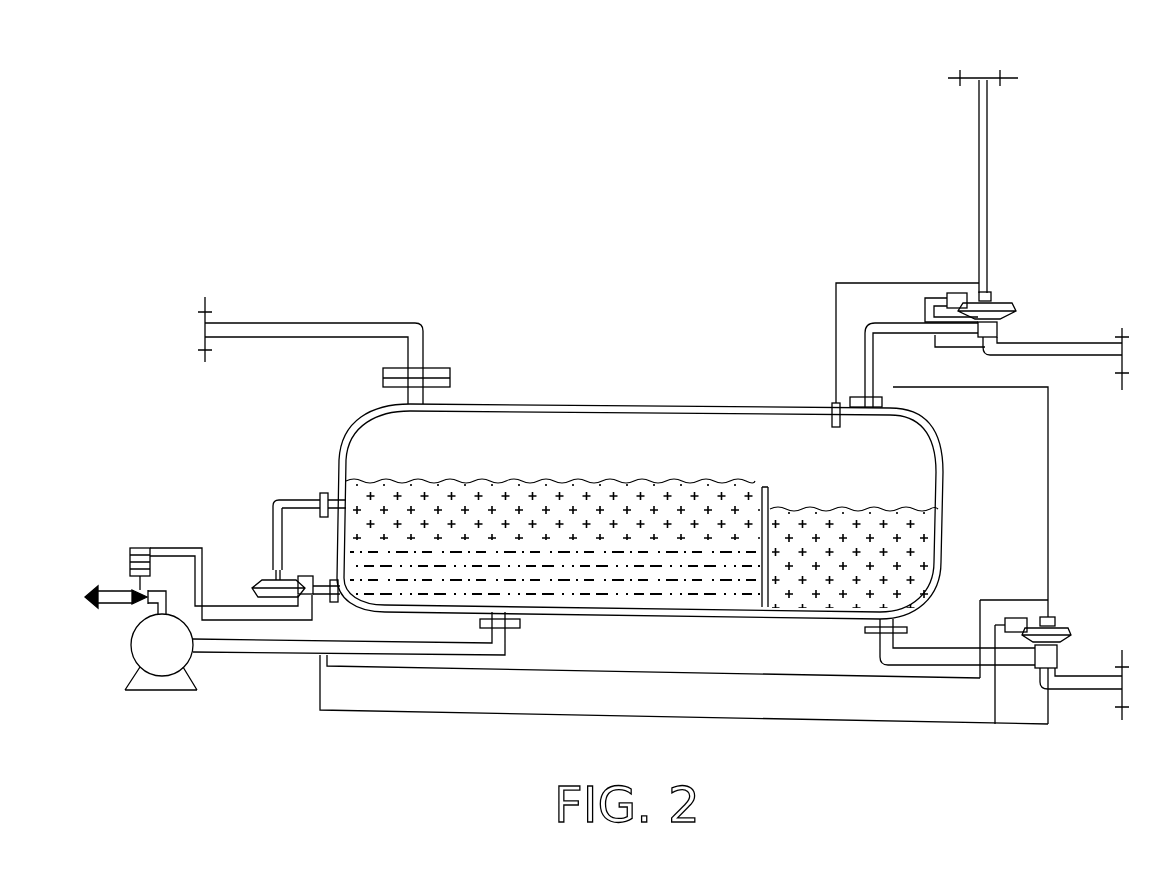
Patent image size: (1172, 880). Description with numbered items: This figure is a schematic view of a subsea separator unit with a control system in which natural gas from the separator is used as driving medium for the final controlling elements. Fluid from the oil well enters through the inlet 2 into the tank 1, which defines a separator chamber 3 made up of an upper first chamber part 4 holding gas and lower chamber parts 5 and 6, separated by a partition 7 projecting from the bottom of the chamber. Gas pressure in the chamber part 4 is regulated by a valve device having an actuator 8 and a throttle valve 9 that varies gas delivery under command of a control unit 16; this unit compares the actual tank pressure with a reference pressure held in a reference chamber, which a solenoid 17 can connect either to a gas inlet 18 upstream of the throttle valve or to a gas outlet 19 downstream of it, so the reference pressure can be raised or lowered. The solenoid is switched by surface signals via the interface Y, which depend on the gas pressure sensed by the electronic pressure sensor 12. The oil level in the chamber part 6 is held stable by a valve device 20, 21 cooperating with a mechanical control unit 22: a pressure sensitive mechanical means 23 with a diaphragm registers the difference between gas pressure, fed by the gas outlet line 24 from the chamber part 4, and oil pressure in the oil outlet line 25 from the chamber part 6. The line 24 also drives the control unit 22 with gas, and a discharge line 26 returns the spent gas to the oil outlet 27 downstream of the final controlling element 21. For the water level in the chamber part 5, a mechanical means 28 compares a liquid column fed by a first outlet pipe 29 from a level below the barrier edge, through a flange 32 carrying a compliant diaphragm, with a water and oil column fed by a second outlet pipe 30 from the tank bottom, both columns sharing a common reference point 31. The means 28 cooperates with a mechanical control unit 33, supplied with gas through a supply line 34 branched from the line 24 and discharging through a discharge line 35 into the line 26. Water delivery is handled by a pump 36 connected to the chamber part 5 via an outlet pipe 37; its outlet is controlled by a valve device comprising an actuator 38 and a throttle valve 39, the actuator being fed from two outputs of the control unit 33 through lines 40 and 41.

The tank 1 is at (620, 422).
The inlet 2 is at (430, 399).
The separator chamber 3 is at (617, 457).
The first chamber part 4 is at (540, 412).
The second chamber part 5 is at (617, 598).
The third chamber part 6 is at (820, 578).
The partition 7 is at (770, 497).
The actuator 8 is at (1000, 319).
The throttle valve 9 is at (1000, 333).
The electronic pressure sensor 12 is at (809, 396).
The control unit 16 is at (966, 292).
The solenoid 17 is at (992, 296).
The gas inlet 18 is at (890, 334).
The gas outlet 19 is at (1063, 356).
The valve device 20 is at (1060, 655).
The final controlling element 21 is at (1062, 662).
The mechanical control unit 22 is at (1025, 618).
The pressure sensitive mechanical means 23 is at (1052, 627).
The gas outlet line 24 is at (1052, 512).
The oil outlet line 25 is at (945, 660).
The discharge line 26 is at (997, 700).
The oil outlet 27 is at (1088, 690).
The mechanical means 28 is at (262, 583).
The first outlet pipe 29 is at (272, 535).
The second outlet pipe 30 is at (343, 601).
The common reference point 31 is at (293, 498).
The flange 32 is at (325, 493).
The mechanical control unit 33 is at (300, 576).
The supply line 34 is at (739, 673).
The discharge line 35 is at (760, 722).
The pump 36 is at (180, 656).
The outlet pipe 37 is at (433, 657).
The actuator 38 is at (128, 558).
The throttle valve 39 is at (137, 604).
The line 40 is at (163, 550).
The line 41 is at (182, 580).